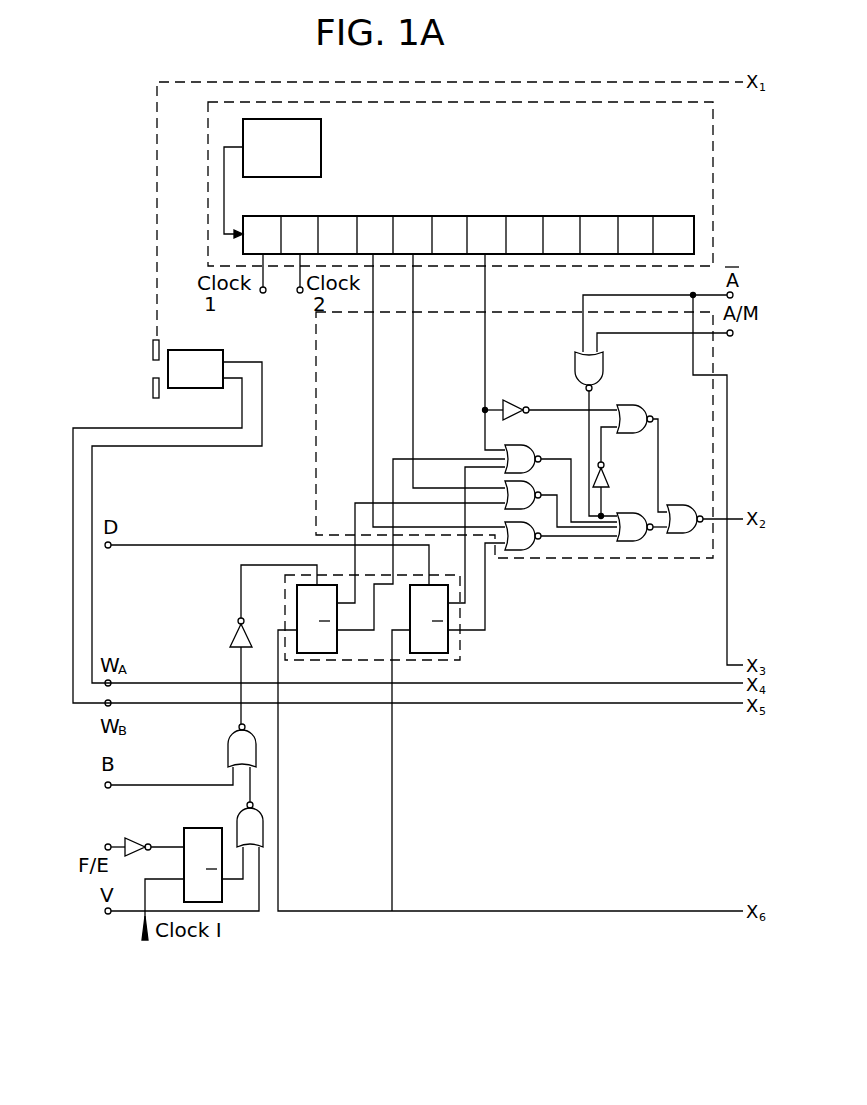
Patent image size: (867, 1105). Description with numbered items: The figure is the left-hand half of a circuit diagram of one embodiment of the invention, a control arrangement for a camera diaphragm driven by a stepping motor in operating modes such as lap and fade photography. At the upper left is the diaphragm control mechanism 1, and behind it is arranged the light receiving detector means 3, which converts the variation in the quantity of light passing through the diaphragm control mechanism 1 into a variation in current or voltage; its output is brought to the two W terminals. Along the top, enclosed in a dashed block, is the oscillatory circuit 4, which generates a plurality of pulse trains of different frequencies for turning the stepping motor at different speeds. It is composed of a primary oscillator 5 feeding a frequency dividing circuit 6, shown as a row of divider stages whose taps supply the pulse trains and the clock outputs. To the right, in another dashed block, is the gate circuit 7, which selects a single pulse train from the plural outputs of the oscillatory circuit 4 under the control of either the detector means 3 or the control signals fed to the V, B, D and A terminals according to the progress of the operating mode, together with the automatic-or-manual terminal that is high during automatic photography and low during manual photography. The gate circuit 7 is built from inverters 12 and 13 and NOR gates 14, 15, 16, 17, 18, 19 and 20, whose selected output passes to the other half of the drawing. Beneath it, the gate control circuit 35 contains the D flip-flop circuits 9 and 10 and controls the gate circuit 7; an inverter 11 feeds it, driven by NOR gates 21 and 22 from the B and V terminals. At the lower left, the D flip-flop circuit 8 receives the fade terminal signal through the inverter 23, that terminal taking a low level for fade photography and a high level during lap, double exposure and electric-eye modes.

The diaphragm control mechanism 1 is at (160, 347).
The light receiving detector means 3 is at (222, 351).
The oscillatory circuit 4 is at (714, 200).
The primary oscillator 5 is at (321, 153).
The frequency dividing circuit 6 is at (490, 216).
The gate circuit 7 is at (716, 368).
The D flip-flop circuit 8 is at (200, 828).
The D flip-flop circuit 9 is at (330, 585).
The D flip-flop circuit 10 is at (438, 585).
The inverter 11 is at (231, 636).
The inverter 12 is at (511, 399).
The inverter 13 is at (609, 480).
The NOR gate 14 is at (601, 370).
The NOR gate 15 is at (527, 446).
The NOR gate 16 is at (527, 483).
The NOR gate 17 is at (527, 525).
The NOR gate 18 is at (645, 405).
The NOR gate 19 is at (626, 513).
The NOR gate 20 is at (674, 505).
The NOR gate 21 is at (229, 746).
The NOR gate 22 is at (265, 821).
The inverter 23 is at (138, 838).
The gate control circuit 35 is at (284, 621).